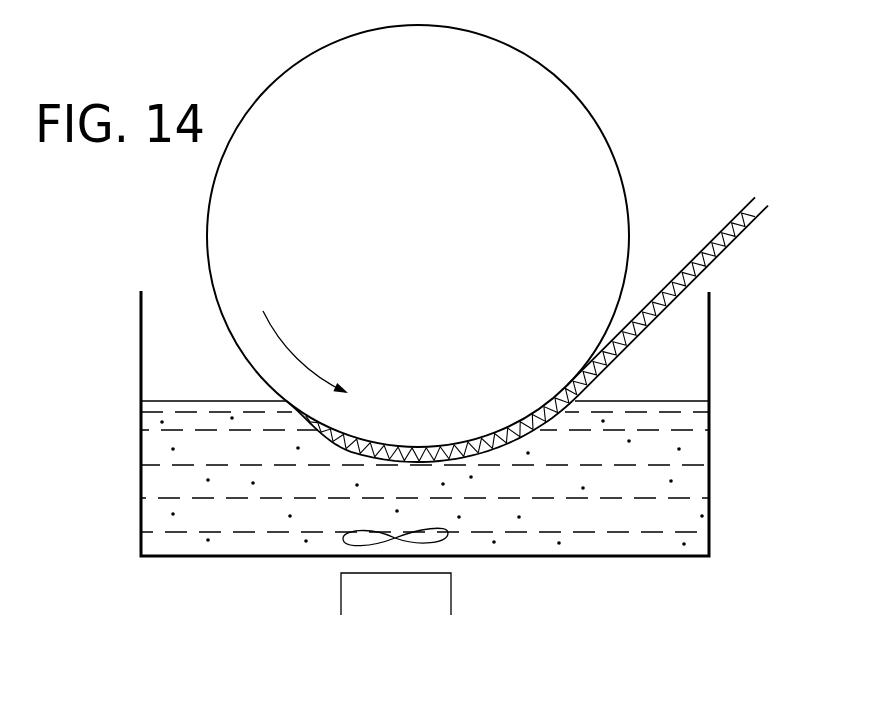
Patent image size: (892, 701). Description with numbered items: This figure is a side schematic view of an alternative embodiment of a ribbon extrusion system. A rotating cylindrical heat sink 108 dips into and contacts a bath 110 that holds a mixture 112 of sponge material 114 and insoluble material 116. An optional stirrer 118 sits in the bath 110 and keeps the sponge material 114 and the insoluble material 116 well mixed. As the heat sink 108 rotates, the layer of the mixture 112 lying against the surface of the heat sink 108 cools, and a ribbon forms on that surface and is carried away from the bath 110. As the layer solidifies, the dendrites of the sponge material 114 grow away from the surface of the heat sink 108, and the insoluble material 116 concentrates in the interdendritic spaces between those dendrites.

The rotating cylindrical heat sink 108 is at (557, 110).
The bath 110 is at (130, 347).
The mixture 112 is at (677, 511).
The sponge material 114 is at (692, 262).
The insoluble material 116 is at (720, 258).
The stirrer 118 is at (448, 537).